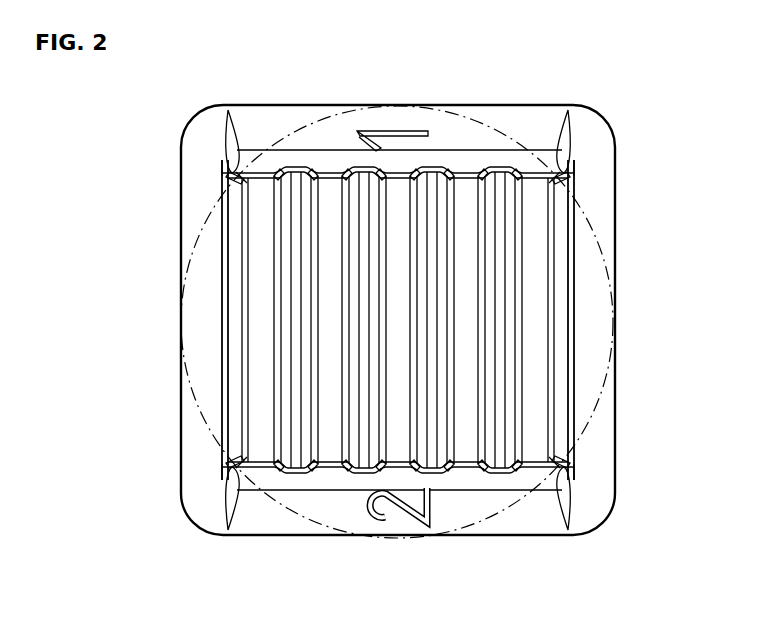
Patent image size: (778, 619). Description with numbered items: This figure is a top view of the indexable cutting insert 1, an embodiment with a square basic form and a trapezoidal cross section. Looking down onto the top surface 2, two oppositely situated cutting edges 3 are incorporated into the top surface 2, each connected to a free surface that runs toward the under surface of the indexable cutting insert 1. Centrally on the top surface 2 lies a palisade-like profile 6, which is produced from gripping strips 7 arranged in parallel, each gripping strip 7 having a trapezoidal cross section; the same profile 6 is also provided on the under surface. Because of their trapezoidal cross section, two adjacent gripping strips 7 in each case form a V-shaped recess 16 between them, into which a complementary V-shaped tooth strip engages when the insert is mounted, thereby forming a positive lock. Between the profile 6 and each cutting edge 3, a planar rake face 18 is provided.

The indexable cutting insert 1 is at (557, 71).
The top surface 2 is at (533, 333).
The cutting edge 3 is at (257, 104).
The profile 6 is at (397, 330).
The gripping strip 7 is at (539, 248).
The V-shaped recess 16 is at (500, 307).
The planar rake face 18 is at (518, 128).